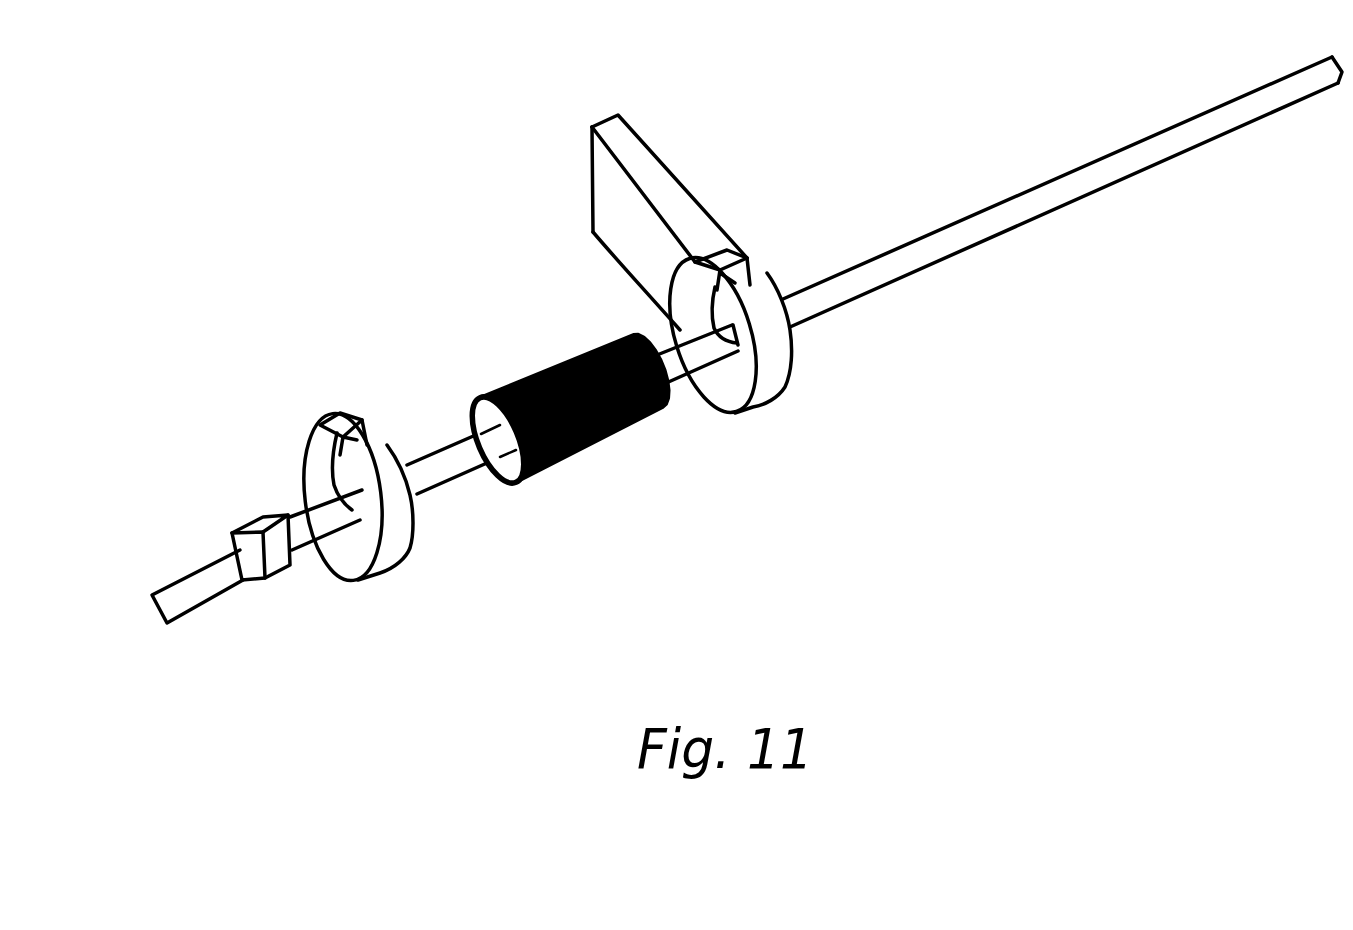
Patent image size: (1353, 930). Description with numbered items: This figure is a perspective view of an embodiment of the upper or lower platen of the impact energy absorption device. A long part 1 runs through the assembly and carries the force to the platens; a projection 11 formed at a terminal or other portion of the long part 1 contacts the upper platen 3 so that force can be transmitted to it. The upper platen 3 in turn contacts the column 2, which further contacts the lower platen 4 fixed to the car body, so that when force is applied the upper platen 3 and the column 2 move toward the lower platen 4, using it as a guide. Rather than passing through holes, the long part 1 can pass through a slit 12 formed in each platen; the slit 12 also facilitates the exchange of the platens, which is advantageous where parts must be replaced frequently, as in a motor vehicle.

The long part 1 is at (1017, 222).
The column 2 is at (577, 450).
The upper platen 3 is at (398, 538).
The lower platen 4 is at (773, 382).
The projection 11 is at (267, 533).
The slit 12 is at (693, 262).